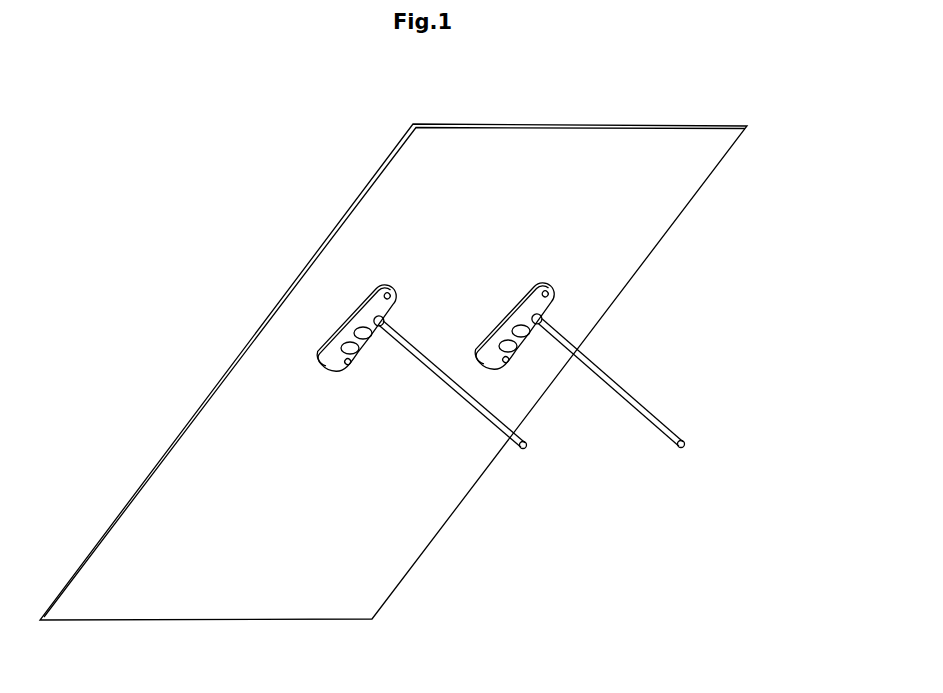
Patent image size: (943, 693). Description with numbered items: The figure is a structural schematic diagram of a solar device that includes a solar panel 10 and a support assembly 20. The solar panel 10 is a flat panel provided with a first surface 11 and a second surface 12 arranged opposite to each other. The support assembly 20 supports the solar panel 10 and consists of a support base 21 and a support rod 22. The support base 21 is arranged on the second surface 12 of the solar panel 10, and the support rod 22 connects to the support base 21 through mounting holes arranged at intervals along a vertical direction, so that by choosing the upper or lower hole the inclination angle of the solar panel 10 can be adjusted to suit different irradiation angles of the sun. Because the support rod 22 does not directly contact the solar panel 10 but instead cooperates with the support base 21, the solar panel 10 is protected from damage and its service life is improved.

The solar panel 10 is at (93, 303).
The first surface 11 is at (182, 427).
The second surface 12 is at (262, 447).
The support assembly 20 is at (782, 215).
The support base 21 is at (548, 308).
The support rod 22 is at (632, 397).